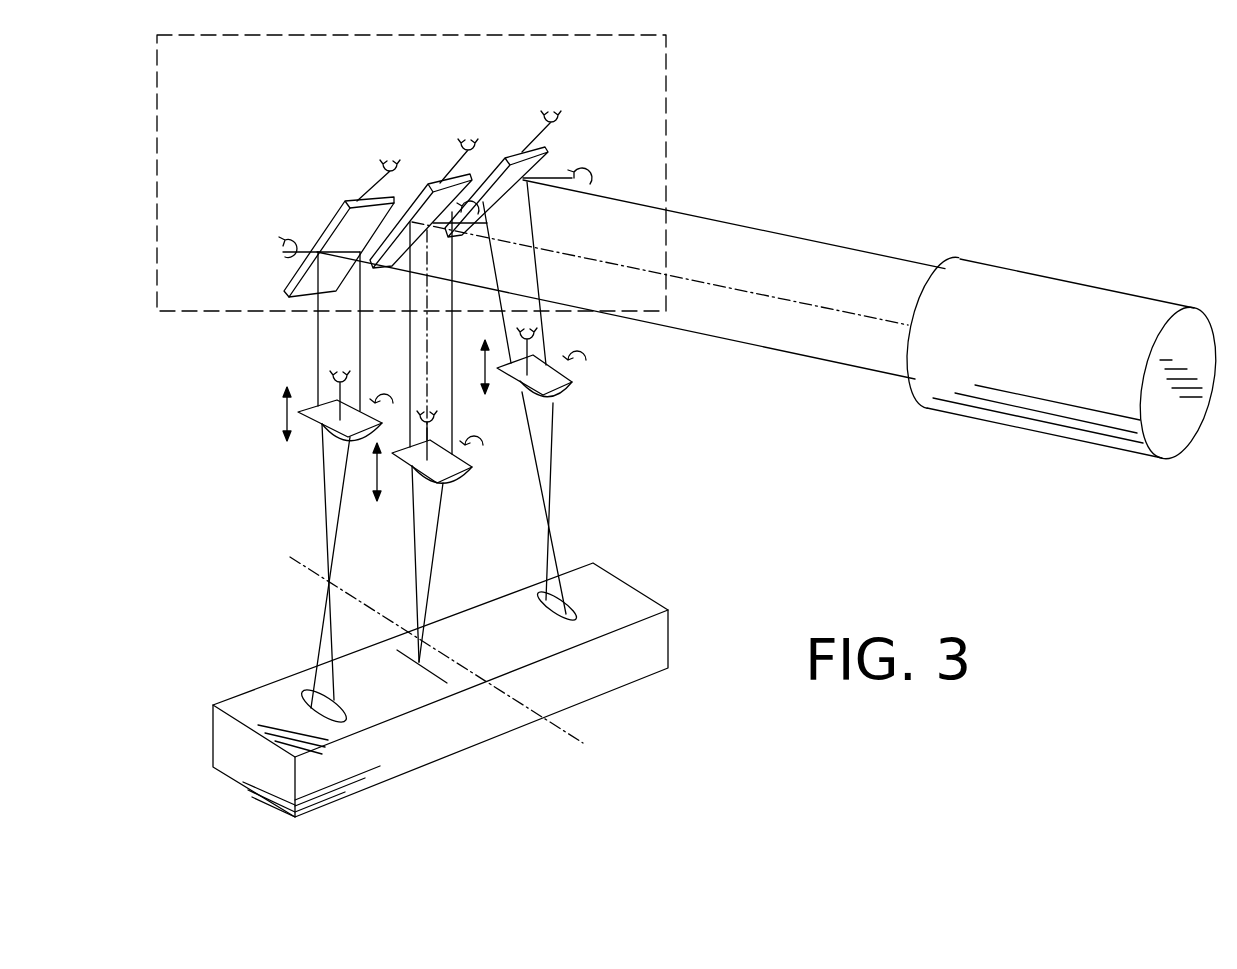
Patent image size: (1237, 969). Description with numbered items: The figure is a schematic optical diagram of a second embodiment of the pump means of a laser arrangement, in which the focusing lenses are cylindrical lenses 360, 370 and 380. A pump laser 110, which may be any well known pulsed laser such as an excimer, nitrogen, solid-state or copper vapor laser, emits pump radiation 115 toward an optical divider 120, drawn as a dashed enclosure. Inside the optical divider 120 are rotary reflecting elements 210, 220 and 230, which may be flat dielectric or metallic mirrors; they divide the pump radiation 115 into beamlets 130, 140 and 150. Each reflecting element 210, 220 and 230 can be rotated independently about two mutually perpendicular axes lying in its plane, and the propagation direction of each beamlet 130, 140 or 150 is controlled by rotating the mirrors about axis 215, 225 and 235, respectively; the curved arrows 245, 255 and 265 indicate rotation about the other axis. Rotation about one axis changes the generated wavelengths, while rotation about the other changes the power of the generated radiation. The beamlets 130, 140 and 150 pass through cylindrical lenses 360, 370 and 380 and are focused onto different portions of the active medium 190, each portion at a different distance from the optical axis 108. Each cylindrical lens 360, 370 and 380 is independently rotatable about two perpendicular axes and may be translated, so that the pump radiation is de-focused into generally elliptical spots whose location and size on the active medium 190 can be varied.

The optical axis 108 is at (583, 743).
The pump laser 110 is at (998, 313).
The pump radiation 115 is at (757, 262).
The optical divider 120 is at (190, 77).
The beamlet 130 is at (318, 330).
The beamlet 140 is at (427, 334).
The beamlet 150 is at (525, 282).
The active medium 190 is at (242, 703).
The reflecting element 210 is at (358, 201).
The axis 215 is at (300, 215).
The reflecting element 220 is at (448, 181).
The axis 225 is at (490, 223).
The reflecting element 230 is at (535, 150).
The axis 235 is at (592, 178).
The first mirror pivot rotation 245 is at (383, 170).
The second mirror pivot rotation 255 is at (462, 146).
The third mirror pivot rotation 265 is at (545, 117).
The cylindrical lens 360 is at (326, 440).
The cylindrical lens 370 is at (460, 478).
The cylindrical lens 380 is at (573, 387).